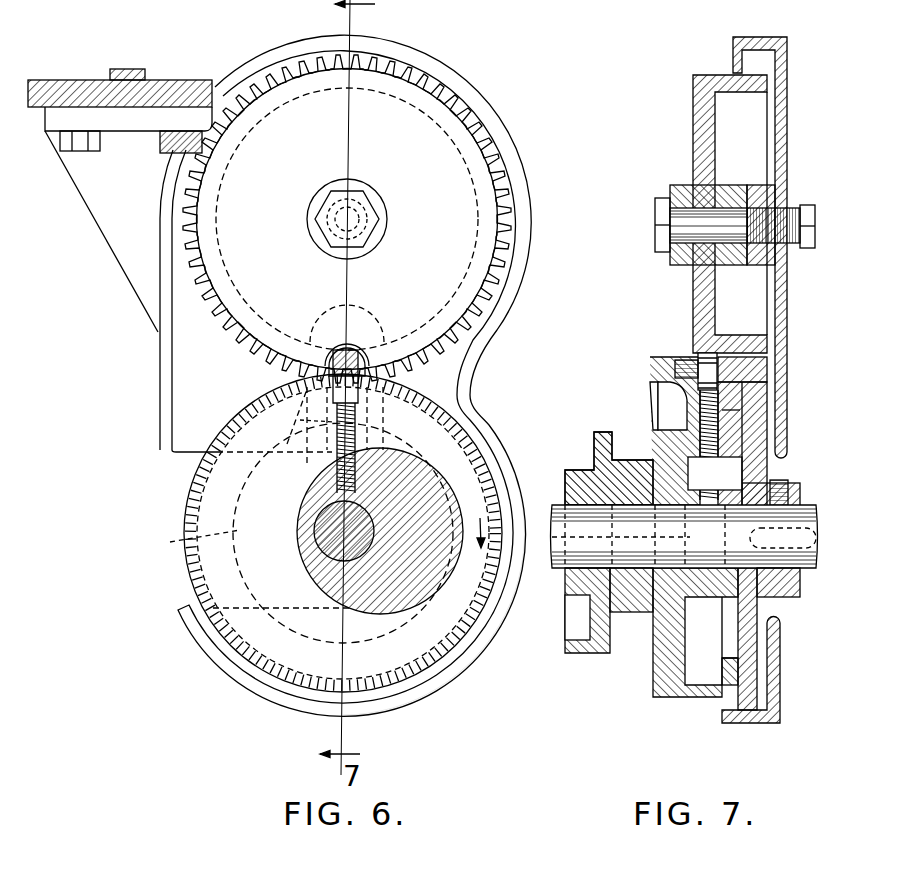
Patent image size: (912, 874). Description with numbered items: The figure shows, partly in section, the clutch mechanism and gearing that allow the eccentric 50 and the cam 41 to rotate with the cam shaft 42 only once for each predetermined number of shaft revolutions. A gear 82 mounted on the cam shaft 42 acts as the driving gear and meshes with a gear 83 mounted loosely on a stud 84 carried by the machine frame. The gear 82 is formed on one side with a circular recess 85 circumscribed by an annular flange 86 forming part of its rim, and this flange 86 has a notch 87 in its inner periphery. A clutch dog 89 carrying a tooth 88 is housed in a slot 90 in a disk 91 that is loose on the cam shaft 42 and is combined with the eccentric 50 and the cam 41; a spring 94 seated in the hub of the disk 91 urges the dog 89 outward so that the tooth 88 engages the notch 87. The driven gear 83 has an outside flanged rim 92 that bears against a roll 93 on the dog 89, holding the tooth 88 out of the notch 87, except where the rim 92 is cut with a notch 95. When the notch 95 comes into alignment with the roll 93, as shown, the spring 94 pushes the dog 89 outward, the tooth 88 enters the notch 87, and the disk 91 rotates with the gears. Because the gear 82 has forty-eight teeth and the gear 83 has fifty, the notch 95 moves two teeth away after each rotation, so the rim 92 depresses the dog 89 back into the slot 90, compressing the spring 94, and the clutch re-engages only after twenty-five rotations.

In FIG. 7, the cam 41 is at (590, 653).
In FIG. 6, the cam shaft 42 is at (322, 552).
In FIG. 7, the cam shaft 42 is at (578, 547).
In FIG. 6, the eccentric 50 is at (440, 490).
In FIG. 7, the eccentric 50 is at (632, 614).
In FIG. 6, the gear 82 is at (470, 398).
In FIG. 7, the gear 82 is at (733, 695).
In FIG. 6, the gear 83 is at (462, 104).
In FIG. 7, the gear 83 is at (743, 64).
In FIG. 6, the stud 84 is at (355, 219).
In FIG. 7, the stud 84 is at (688, 232).
In FIG. 6, the circular recess 85 is at (189, 542).
In FIG. 7, the circular recess 85 is at (728, 620).
In FIG. 7, the annular flange 86 is at (735, 665).
In FIG. 6, the notch 87 is at (368, 410).
In FIG. 7, the notch 87 is at (735, 392).
In FIG. 7, the tooth 88 is at (745, 430).
In FIG. 7, the clutch dog 89 is at (660, 392).
In FIG. 6, the slot 90 is at (308, 470).
In FIG. 7, the slot 90 is at (737, 470).
In FIG. 6, the disk 91 is at (212, 496).
In FIG. 7, the disk 91 is at (660, 424).
In FIG. 7, the flanged rim 92 is at (697, 112).
In FIG. 6, the roll 93 is at (333, 355).
In FIG. 7, the roll 93 is at (680, 362).
In FIG. 6, the spring 94 is at (303, 413).
In FIG. 7, the spring 94 is at (738, 412).
In FIG. 6, the notch 95 is at (357, 352).
In FIG. 7, the notch 95 is at (700, 352).